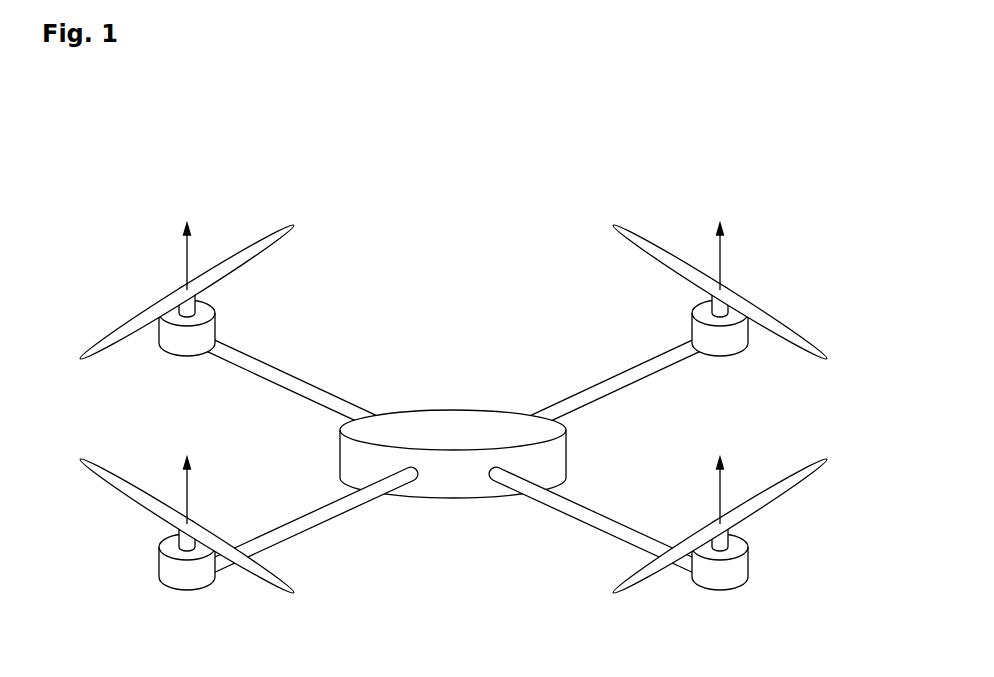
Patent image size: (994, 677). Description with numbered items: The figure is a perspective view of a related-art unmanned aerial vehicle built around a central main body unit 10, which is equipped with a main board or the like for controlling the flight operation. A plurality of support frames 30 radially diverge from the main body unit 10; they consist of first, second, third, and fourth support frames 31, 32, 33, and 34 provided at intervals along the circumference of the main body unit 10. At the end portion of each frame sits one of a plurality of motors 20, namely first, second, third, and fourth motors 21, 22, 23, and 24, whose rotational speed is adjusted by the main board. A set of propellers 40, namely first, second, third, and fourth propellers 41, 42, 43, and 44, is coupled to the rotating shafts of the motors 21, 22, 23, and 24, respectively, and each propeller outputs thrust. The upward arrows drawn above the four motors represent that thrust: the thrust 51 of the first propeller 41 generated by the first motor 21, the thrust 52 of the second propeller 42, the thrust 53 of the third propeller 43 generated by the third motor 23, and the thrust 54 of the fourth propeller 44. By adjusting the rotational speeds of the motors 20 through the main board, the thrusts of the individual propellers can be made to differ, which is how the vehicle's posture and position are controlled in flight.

The main body unit 10 is at (428, 423).
The motors 20 is at (181, 597).
The first motor 21 is at (177, 578).
The second motor 22 is at (217, 325).
The third motor 23 is at (690, 327).
The fourth motor 24 is at (728, 580).
The support frames 30 is at (311, 549).
The first support frame 31 is at (297, 530).
The second support frame 32 is at (307, 380).
The third support frame 33 is at (597, 380).
The fourth support frame 34 is at (607, 528).
The propellers 40 is at (186, 498).
The first propeller 41 is at (113, 480).
The second propeller 42 is at (270, 233).
The third propeller 43 is at (638, 232).
The fourth propeller 44 is at (795, 467).
The thrust of the first propeller 51 is at (190, 482).
The thrust of the second propeller 52 is at (190, 247).
The thrust of the third propeller 53 is at (715, 247).
The thrust of the fourth propeller 54 is at (713, 482).